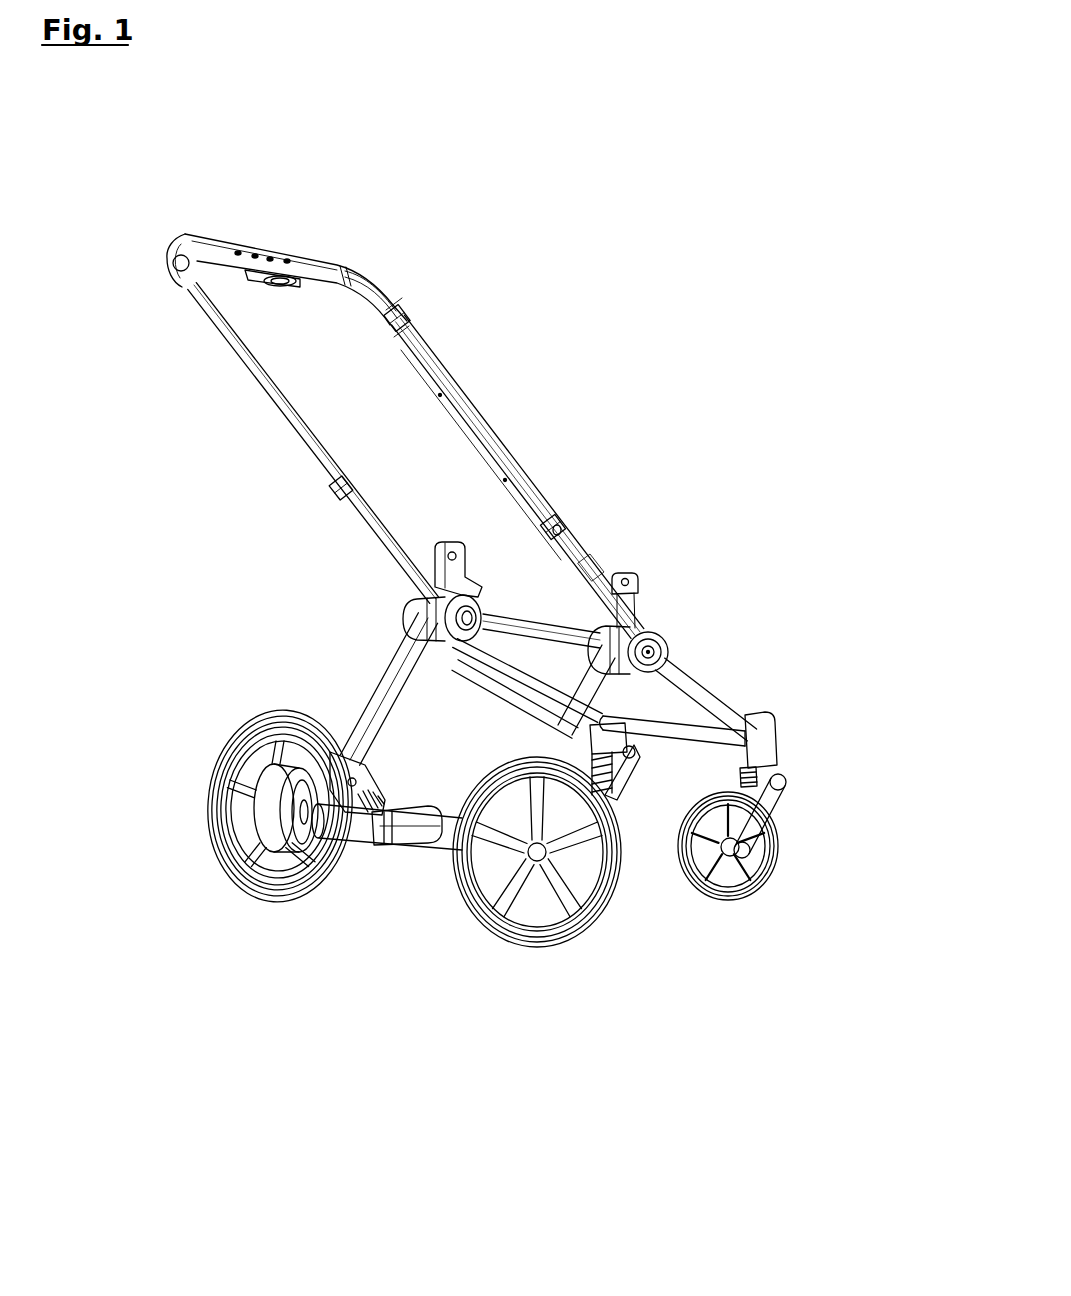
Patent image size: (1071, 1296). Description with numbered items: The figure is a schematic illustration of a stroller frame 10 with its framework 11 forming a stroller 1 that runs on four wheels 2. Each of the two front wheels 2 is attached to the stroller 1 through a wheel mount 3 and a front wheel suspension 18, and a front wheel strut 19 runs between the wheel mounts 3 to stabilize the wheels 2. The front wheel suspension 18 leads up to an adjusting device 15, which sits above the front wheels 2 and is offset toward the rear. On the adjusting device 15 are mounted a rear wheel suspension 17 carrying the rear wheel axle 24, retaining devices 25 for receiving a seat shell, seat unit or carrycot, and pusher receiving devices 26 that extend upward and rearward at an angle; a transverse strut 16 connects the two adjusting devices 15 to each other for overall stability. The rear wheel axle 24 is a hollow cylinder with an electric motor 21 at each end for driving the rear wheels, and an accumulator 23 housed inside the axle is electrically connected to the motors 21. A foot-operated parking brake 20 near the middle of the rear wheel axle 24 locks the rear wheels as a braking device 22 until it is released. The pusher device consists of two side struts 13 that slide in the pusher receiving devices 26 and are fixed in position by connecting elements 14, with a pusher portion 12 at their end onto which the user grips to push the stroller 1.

The stroller 1 is at (658, 267).
The wheel 2 is at (781, 857).
The wheel mount 3 is at (783, 732).
The stroller frame 10 is at (463, 343).
The framework 11 is at (507, 429).
The pusher portion 12 is at (268, 243).
The side strut 13 is at (208, 323).
The connecting element 14 is at (535, 528).
The adjusting device 15 is at (486, 600).
The transverse strut 16 is at (505, 633).
The rear wheel suspension 17 is at (383, 682).
The front wheel suspension 18 is at (703, 680).
The front wheel strut 19 is at (690, 750).
The parking brake 20 is at (386, 849).
The motor 21 is at (316, 849).
The braking device 22 is at (285, 849).
The accumulator 23 is at (429, 864).
The rear wheel axle 24 is at (360, 849).
The retaining devices 25 is at (472, 548).
The pusher receiving devices 26 is at (598, 557).